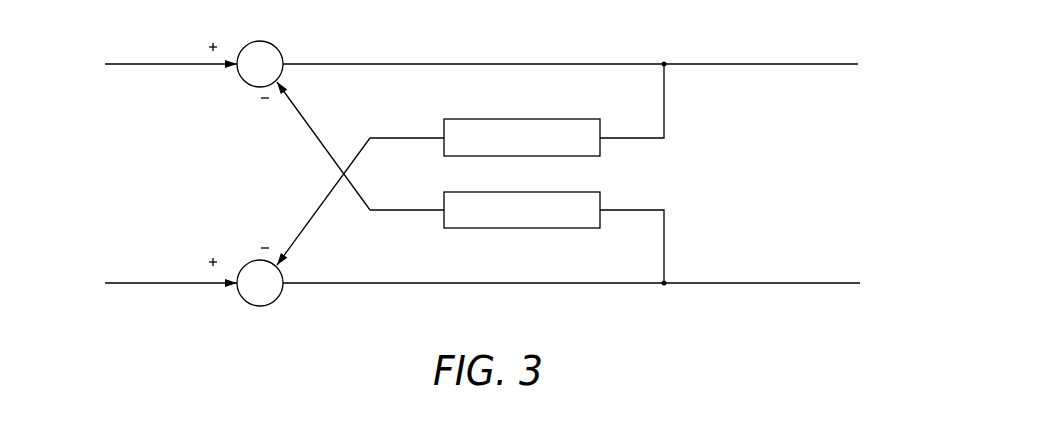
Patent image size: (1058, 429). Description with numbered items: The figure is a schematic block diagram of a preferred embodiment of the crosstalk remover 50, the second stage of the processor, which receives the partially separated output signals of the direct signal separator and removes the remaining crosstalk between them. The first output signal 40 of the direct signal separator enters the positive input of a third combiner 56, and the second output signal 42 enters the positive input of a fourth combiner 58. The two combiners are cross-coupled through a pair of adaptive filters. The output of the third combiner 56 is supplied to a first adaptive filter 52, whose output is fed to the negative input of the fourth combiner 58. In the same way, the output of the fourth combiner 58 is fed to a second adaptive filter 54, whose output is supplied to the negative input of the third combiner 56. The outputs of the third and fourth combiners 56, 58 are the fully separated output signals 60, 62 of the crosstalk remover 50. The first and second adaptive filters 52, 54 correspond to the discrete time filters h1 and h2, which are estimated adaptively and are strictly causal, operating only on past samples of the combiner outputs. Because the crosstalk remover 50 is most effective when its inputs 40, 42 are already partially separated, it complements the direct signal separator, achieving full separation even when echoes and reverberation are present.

The first output signal 40 is at (154, 65).
The second output signal 42 is at (154, 284).
The crosstalk remover 50 is at (676, 184).
The first adaptive filter 52 is at (543, 125).
The second adaptive filter 54 is at (543, 223).
The third combiner 56 is at (243, 83).
The fourth combiner 58 is at (243, 301).
The output signal 60 is at (585, 66).
The output signal 62 is at (586, 285).